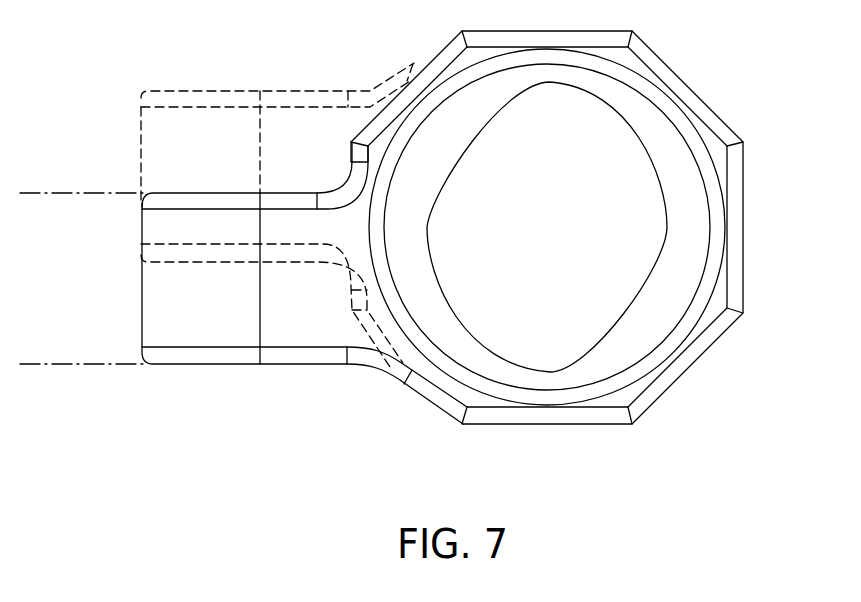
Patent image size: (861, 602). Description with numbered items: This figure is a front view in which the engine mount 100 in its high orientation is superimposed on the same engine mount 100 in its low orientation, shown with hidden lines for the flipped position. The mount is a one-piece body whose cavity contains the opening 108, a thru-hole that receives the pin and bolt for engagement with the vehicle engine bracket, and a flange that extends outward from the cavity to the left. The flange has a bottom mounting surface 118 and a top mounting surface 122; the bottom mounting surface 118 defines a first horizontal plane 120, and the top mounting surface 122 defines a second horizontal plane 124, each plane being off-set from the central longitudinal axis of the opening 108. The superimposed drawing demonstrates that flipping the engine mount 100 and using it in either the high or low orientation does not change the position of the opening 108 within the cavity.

The engine mount 100 is at (694, 441).
The opening 108 is at (643, 222).
The bottom mounting surface 118 is at (240, 365).
The first horizontal plane 120 is at (72, 365).
The top mounting surface 122 is at (240, 193).
The second horizontal plane 124 is at (72, 193).